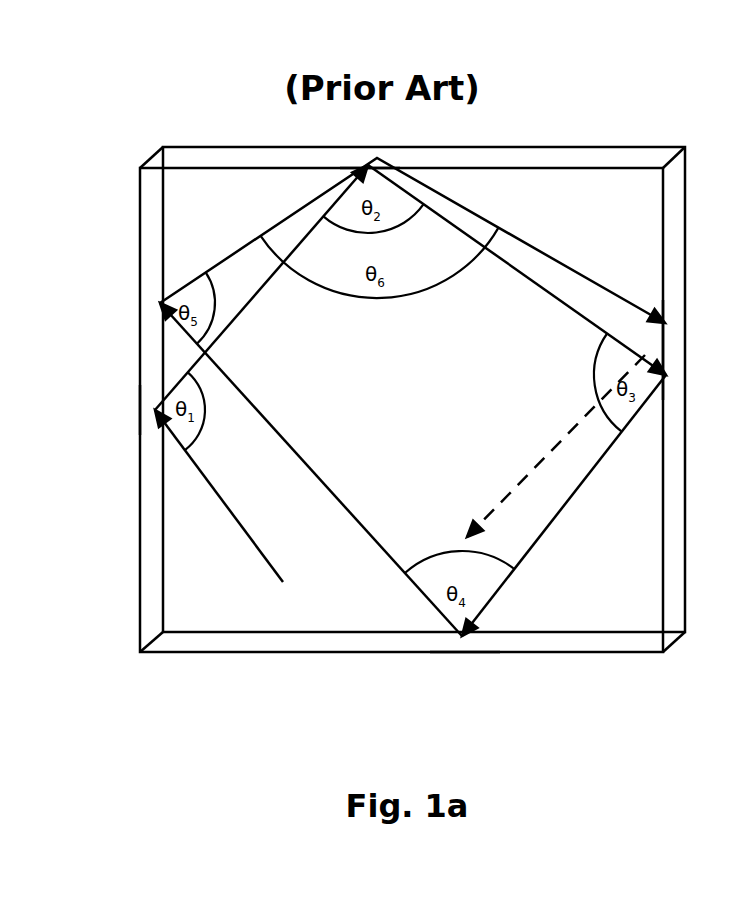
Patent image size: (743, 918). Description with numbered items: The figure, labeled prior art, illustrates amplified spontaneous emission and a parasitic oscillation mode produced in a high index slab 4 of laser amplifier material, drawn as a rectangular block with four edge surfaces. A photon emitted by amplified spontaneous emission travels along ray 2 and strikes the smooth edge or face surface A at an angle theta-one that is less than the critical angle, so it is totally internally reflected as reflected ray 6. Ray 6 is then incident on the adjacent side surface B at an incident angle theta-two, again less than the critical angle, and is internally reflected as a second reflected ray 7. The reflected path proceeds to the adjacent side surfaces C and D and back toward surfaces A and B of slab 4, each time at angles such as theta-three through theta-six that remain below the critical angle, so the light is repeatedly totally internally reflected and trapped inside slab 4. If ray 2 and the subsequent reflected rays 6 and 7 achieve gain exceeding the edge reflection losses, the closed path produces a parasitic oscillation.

The ray 2 is at (258, 548).
The high index slab 4 is at (640, 251).
The reflected ray 6 is at (248, 306).
The second reflected ray 7 is at (564, 303).
The face surface A is at (152, 532).
The adjacent side surface B is at (581, 154).
The adjacent side surface C is at (672, 192).
The adjacent side surface D is at (577, 638).